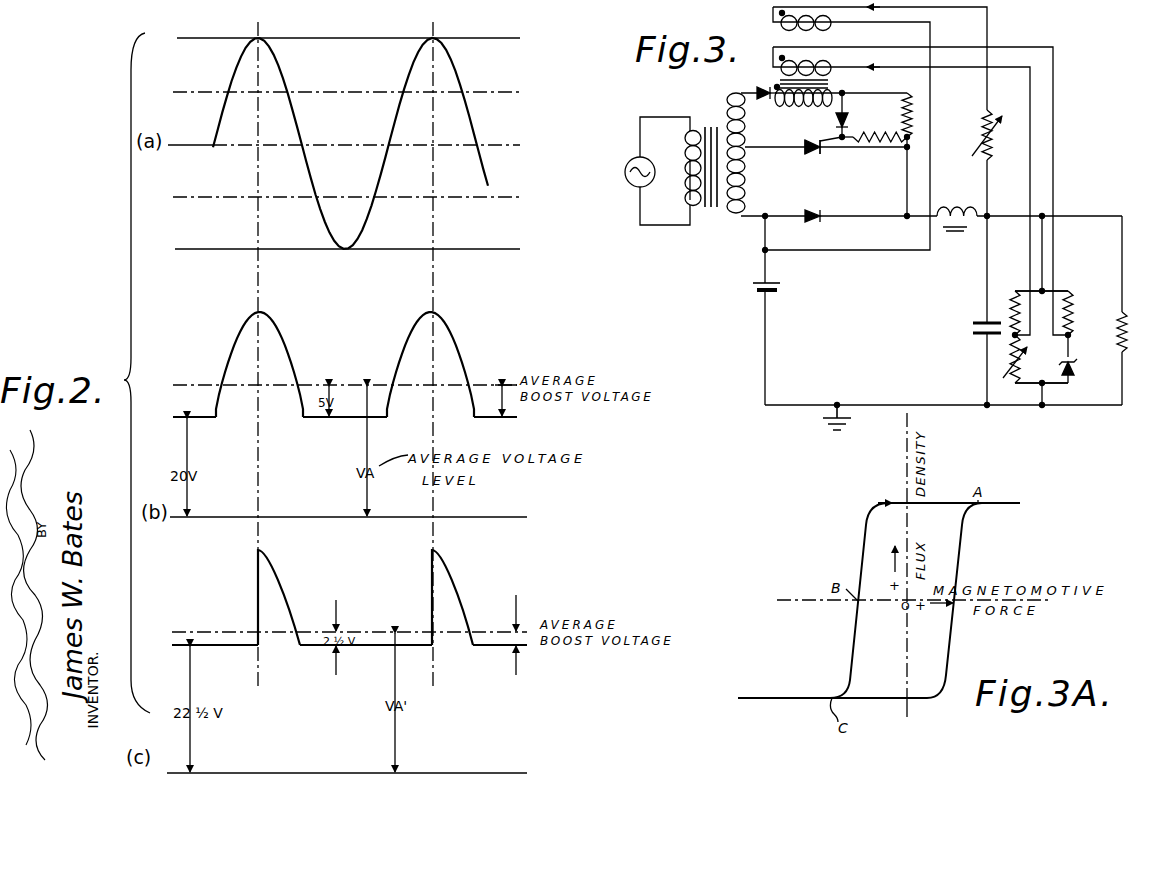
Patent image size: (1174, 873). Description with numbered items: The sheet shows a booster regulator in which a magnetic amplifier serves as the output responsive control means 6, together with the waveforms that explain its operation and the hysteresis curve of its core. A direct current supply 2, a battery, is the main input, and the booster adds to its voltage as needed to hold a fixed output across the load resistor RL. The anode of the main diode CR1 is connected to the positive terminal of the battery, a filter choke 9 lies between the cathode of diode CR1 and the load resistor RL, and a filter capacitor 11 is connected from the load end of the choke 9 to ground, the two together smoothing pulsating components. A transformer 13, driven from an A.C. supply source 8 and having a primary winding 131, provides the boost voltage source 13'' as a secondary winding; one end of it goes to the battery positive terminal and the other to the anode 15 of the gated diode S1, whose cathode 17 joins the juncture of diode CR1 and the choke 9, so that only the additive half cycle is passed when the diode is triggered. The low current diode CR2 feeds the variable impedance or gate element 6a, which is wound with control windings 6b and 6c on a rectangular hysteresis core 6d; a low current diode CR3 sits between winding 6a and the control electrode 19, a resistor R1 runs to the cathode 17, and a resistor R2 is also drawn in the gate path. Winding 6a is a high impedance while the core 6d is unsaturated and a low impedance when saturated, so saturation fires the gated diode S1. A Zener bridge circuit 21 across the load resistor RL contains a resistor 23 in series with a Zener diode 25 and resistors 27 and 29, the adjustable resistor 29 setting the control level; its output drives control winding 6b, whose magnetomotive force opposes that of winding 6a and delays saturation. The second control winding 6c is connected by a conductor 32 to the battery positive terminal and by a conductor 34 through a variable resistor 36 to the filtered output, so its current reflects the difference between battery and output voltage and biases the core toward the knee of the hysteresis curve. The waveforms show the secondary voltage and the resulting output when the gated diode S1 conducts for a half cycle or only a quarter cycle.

The direct current supply 2 is at (753, 283).
The output responsive control means 6 is at (779, 65).
The variable impedance or gate element 6a is at (806, 104).
The control winding 6b is at (820, 64).
The second control winding 6c is at (815, 19).
The core 6d is at (775, 79).
The A.C. supply source 8 is at (624, 173).
The filter choke 9 is at (956, 213).
The filter capacitor 11 is at (977, 334).
The transformer 13 is at (692, 159).
The boost voltage source 13'' is at (773, 154).
The primary winding 131 is at (692, 185).
The anode 15 is at (803, 151).
The cathode 17 is at (830, 159).
The control electrode 19 is at (840, 134).
The Zener bridge circuit 21 is at (1050, 351).
The resistor 23 is at (1073, 305).
The Zener diode 25 is at (1074, 370).
The resistor 27 is at (1011, 303).
The adjustable resistor 29 is at (1010, 358).
The conductor 32 is at (930, 38).
The conductor 34 is at (995, 17).
The variable resistor 36 is at (990, 154).
The diode CR1 is at (810, 210).
The diode CR2 is at (751, 86).
The low current capacity diode CR3 is at (848, 120).
The resistor R1 is at (915, 115).
The resistor R2 is at (876, 131).
The load resistor RL is at (1135, 310).
The gated diode S1 is at (811, 139).